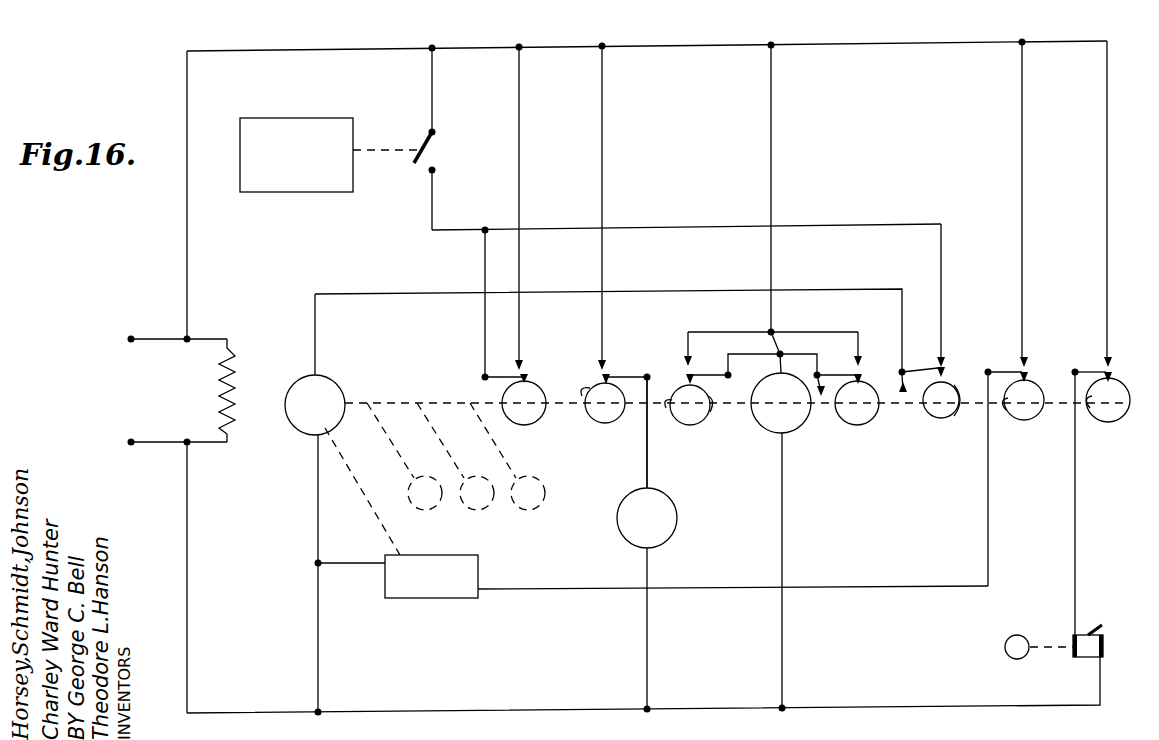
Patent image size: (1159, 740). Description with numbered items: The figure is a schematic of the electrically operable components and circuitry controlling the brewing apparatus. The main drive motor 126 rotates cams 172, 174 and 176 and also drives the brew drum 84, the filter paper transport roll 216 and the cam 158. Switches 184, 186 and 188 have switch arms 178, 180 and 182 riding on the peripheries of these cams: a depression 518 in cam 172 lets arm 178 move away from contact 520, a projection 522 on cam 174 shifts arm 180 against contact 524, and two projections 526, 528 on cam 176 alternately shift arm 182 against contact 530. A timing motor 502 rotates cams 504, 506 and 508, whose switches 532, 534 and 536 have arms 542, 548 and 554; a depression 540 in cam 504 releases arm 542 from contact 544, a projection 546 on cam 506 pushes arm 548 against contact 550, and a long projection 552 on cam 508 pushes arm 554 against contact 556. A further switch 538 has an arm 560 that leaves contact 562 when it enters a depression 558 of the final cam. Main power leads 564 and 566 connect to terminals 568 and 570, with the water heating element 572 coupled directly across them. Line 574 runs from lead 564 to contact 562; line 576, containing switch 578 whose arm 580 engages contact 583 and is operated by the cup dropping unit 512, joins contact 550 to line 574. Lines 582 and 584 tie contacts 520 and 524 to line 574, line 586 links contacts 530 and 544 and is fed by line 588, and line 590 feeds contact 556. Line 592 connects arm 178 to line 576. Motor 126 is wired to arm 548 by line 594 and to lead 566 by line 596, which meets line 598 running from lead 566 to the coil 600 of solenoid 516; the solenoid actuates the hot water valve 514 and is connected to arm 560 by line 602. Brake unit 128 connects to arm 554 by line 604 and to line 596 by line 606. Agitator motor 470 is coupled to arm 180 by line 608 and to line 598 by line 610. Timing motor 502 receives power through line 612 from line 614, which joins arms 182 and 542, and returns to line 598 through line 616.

The cup dropping unit 512 is at (308, 119).
The line 574 is at (189, 232).
The line 576 is at (434, 104).
The switch 578 is at (436, 132).
The switch arm 580 is at (416, 145).
The contact 583 is at (436, 170).
The line 592 is at (484, 271).
The line 582 is at (521, 164).
The line 584 is at (604, 166).
The line 588 is at (773, 184).
The line 590 is at (1024, 204).
The main power lead 564 is at (167, 343).
The power terminal 568 is at (131, 343).
The main power lead 566 is at (178, 438).
The power terminal 570 is at (1110, 424).
The electrical resistance water heating element 572 is at (236, 362).
The main drive motor 126 is at (355, 380).
The line 596 is at (316, 523).
The line 594 is at (384, 296).
The brew drum 84 is at (414, 508).
The roll 216 is at (472, 512).
The cam 158 is at (536, 506).
The line 606 is at (346, 566).
The brake 128 is at (412, 600).
The line 604 is at (545, 588).
The cam 172 is at (518, 430).
The switch 184 is at (482, 378).
The switch arm 178 is at (502, 376).
The depression 518 is at (527, 380).
The contact 520 is at (522, 362).
The projection 522 is at (582, 400).
The cam 174 is at (606, 424).
The contact 524 is at (598, 373).
The switch arm 180 is at (620, 376).
The switch 186 is at (647, 374).
The line 586 is at (790, 330).
The line 614 is at (760, 334).
The contact 530 is at (686, 352).
The contact 544 is at (858, 354).
The line 612 is at (780, 358).
The switch 188 is at (728, 378).
The switch arm 182 is at (700, 372).
The cam 176 is at (702, 424).
The projection 526 is at (670, 410).
The projection 528 is at (712, 408).
The timing motor 502 is at (786, 434).
The line 616 is at (784, 562).
The switch arm 542 is at (830, 372).
The depression 540 is at (860, 374).
The switch 532 is at (821, 398).
The cam 504 is at (862, 426).
The switch arm 548 is at (928, 368).
The switch 534 is at (902, 394).
The contact 550 is at (944, 356).
The cam 506 is at (944, 418).
The projection 546 is at (958, 408).
The switch 536 is at (986, 368).
The switch arm 554 is at (1000, 372).
The contact 556 is at (1026, 356).
The cam 508 is at (1024, 420).
The cam projection 552 is at (1004, 410).
The switch 538 is at (1073, 368).
The line 602 is at (1077, 564).
The depression 558 is at (1112, 374).
The contact 562 is at (1110, 358).
The switch arm 560 is at (1088, 392).
The line 608 is at (650, 472).
The agitator motor 470 is at (678, 518).
The line 610 is at (650, 618).
The line 598 is at (256, 712).
The coil 600 is at (1082, 656).
The solenoid 516 is at (1100, 626).
The valve 514 is at (1004, 648).